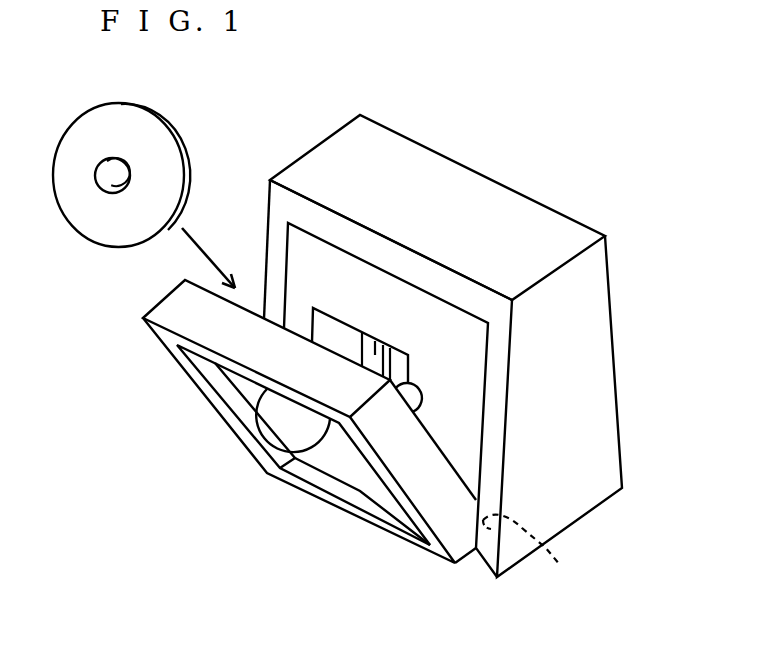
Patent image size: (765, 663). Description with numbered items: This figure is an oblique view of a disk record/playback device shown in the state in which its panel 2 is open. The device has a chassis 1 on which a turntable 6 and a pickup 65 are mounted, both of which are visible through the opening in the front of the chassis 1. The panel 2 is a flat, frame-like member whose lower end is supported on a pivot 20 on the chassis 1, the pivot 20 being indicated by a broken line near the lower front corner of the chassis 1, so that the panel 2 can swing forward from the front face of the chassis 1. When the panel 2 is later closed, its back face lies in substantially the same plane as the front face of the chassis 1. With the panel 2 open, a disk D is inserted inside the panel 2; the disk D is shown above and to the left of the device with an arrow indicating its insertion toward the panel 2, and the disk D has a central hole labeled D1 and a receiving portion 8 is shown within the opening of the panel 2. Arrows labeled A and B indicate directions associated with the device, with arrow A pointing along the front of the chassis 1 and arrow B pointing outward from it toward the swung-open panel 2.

The chassis 1 is at (478, 348).
The panel 2 is at (428, 498).
The turntable 6 is at (416, 389).
The disc receiving portion 8 is at (303, 425).
The pivot 20 is at (538, 552).
The pickup 65 is at (377, 347).
The disk D is at (165, 165).
The center hole of disc D1 is at (123, 167).
The direction A is at (337, 272).
The direction B is at (440, 433).